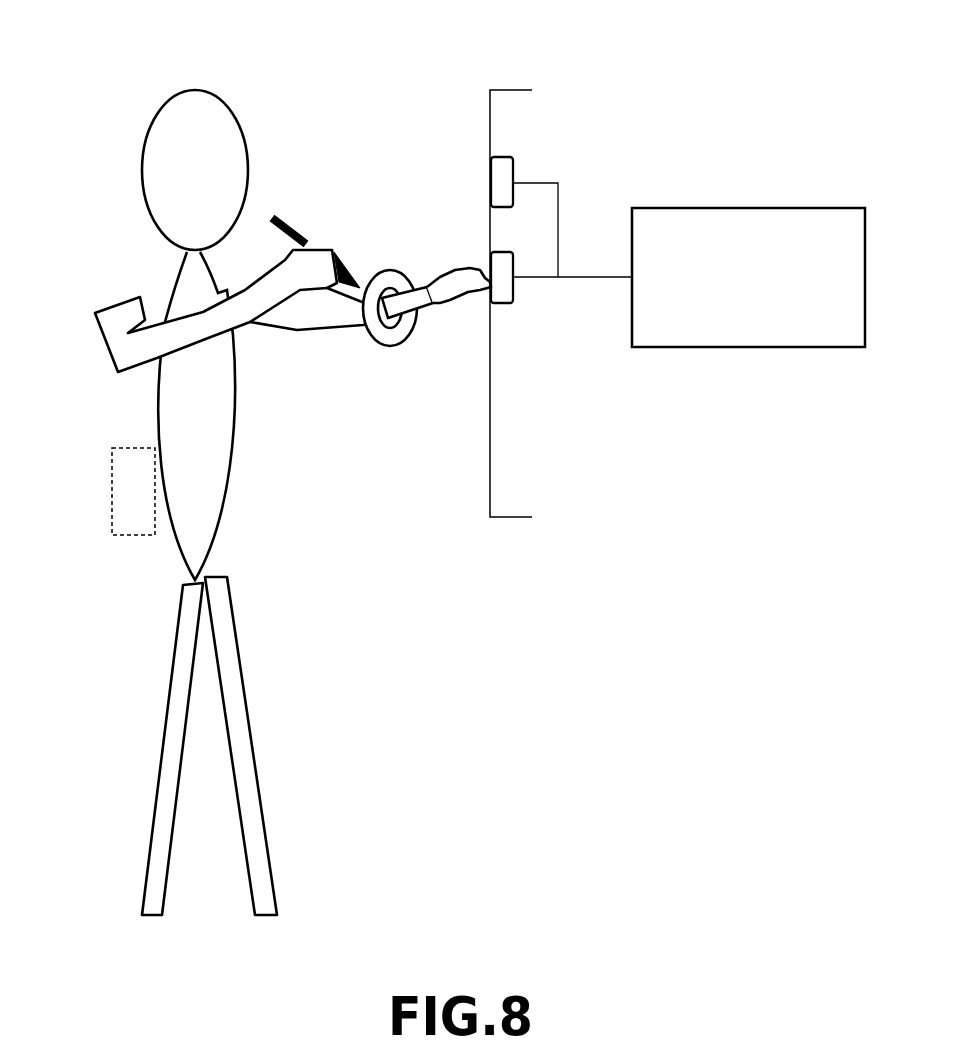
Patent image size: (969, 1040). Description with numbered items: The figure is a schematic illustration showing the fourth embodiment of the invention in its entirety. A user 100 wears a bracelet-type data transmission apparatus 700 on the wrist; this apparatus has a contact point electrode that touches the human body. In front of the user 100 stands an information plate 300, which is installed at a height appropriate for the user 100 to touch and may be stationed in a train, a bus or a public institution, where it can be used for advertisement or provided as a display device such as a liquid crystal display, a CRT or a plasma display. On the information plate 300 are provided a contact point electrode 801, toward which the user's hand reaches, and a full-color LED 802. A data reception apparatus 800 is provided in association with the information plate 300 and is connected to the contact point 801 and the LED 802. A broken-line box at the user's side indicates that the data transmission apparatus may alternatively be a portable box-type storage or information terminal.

The user 100 is at (155, 117).
The information plate 300 is at (513, 88).
The data transmission apparatus 700 is at (386, 337).
The data reception apparatus 800 is at (783, 208).
The contact point (electrode) 801 is at (513, 292).
The full-color LED 802 is at (513, 158).